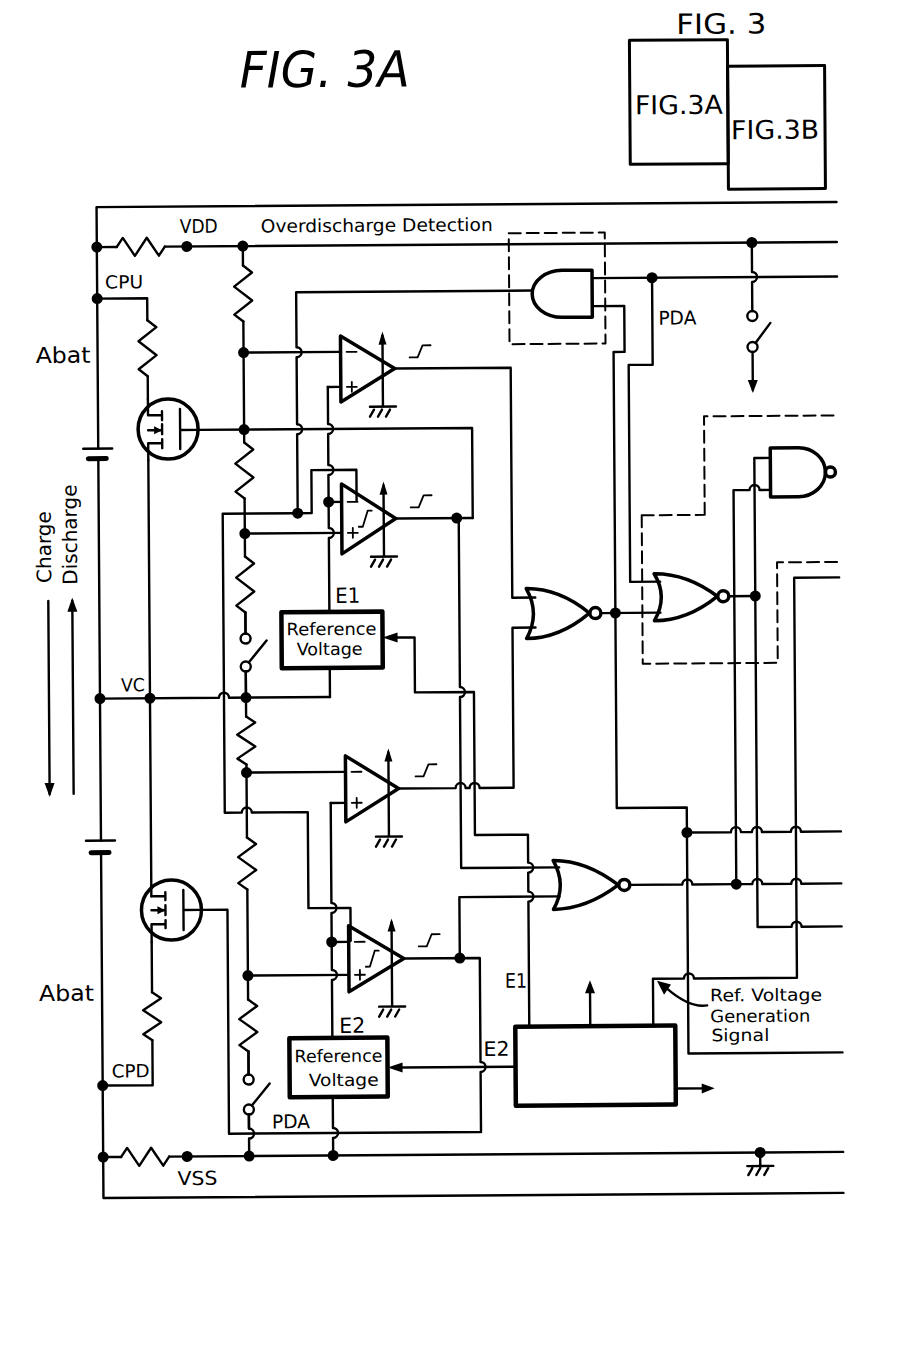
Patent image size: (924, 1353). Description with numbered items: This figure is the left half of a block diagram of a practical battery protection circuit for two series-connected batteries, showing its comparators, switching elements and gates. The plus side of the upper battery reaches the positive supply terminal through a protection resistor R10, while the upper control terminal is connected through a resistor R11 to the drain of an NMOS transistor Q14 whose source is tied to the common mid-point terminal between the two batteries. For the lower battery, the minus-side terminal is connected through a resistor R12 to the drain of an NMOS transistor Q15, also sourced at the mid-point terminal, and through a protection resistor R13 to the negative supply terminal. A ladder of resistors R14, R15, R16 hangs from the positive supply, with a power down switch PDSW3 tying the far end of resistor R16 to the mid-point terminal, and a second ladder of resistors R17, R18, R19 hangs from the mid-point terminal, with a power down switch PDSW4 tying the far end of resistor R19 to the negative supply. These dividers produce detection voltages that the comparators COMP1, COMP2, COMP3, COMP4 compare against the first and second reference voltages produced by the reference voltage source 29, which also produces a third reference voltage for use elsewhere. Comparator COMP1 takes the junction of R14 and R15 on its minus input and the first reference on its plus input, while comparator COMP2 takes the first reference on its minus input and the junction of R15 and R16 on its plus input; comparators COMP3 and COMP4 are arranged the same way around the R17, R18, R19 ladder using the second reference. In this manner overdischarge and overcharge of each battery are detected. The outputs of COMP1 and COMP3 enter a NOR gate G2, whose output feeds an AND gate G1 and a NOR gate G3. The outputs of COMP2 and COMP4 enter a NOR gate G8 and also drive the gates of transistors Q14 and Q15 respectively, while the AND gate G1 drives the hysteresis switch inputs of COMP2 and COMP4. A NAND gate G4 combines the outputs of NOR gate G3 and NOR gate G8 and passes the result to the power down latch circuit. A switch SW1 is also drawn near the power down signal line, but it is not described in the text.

The reference voltage source 29 is at (570, 1106).
The protection resistor R10 is at (141, 234).
The resistor R11 is at (168, 348).
The resistor R12 is at (175, 1016).
The protection resistor R13 is at (145, 1173).
The resistor R14 is at (262, 293).
The resistor R15 is at (263, 470).
The resistor R16 is at (266, 584).
The resistor R17 is at (268, 740).
The resistor R18 is at (269, 863).
The resistor R19 is at (271, 1024).
The NMOS transistor Q14 is at (168, 447).
The NMOS transistor Q15 is at (172, 897).
The comparator COMP1 is at (387, 359).
The comparator COMP2 is at (394, 517).
The comparator COMP3 is at (399, 807).
The comparator COMP4 is at (406, 977).
The AND gate G1 is at (557, 289).
The NOR gate G2 is at (563, 599).
The NOR gate G3 is at (740, 539).
The NAND gate G4 is at (803, 487).
The NOR gate G8 is at (591, 871).
The switch SW1 is at (774, 317).
The power down switch PDSW3 is at (209, 655).
The power down switch PDSW4 is at (216, 1099).